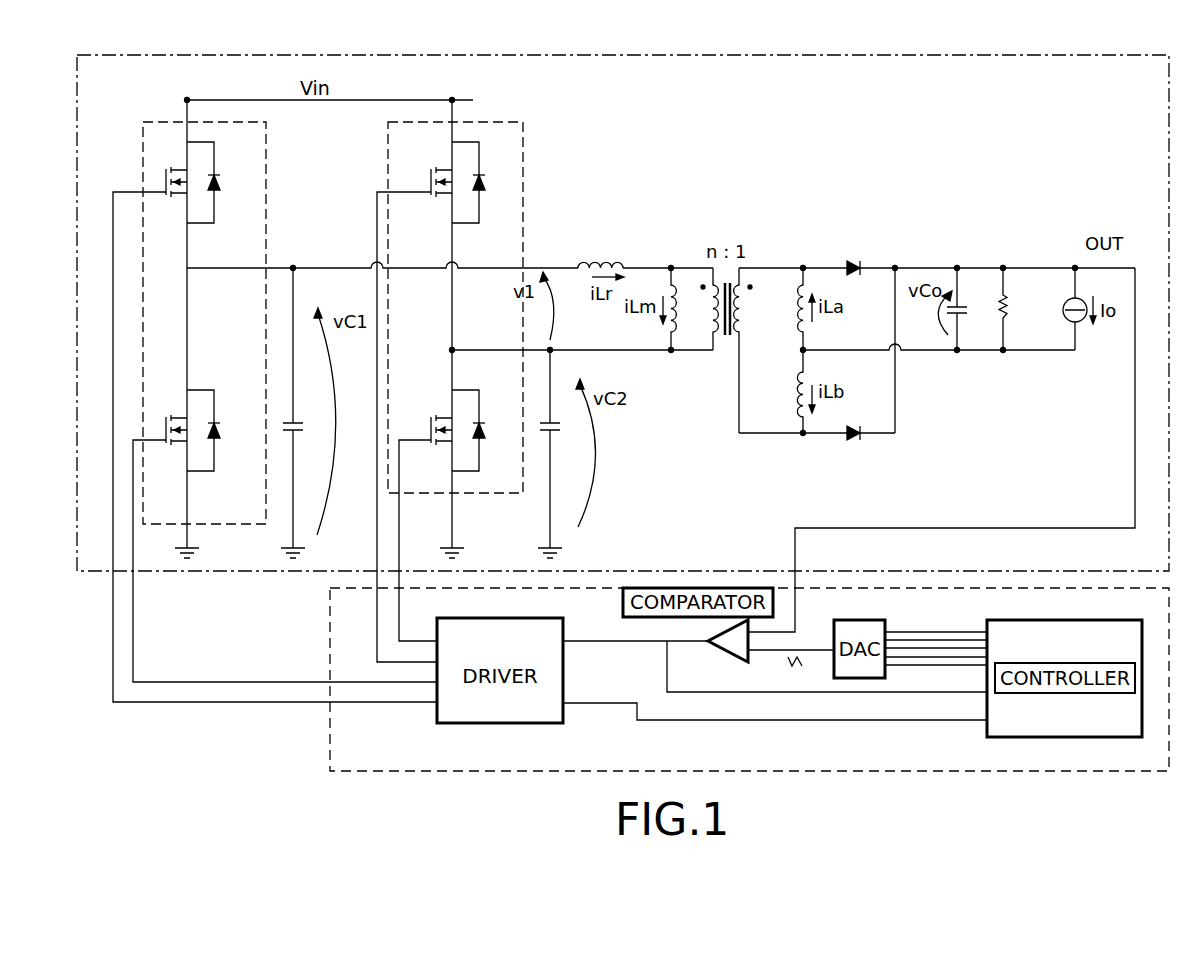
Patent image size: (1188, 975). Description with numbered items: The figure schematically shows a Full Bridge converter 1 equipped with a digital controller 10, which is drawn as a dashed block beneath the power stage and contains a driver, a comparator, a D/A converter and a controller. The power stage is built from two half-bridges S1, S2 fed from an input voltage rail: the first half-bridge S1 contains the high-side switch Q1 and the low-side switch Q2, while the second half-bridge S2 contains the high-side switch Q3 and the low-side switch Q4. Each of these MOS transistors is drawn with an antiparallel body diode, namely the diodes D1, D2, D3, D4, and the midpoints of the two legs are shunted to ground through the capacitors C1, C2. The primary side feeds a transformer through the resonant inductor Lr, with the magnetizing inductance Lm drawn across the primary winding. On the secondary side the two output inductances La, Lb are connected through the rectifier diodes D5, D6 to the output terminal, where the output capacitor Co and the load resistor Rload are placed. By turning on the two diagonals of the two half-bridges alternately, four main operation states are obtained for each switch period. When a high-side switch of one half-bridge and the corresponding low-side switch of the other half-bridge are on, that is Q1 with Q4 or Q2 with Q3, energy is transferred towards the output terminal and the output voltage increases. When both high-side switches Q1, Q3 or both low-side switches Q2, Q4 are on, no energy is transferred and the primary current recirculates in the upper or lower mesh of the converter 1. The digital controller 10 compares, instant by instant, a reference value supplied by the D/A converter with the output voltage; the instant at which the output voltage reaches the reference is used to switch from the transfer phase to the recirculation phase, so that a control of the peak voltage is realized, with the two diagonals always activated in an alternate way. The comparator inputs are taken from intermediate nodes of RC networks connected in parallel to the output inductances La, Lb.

The Full Bridge converter 1 is at (1029, 111).
The digital controller 10 is at (435, 771).
The half-bridge S1 is at (200, 106).
The half-bridge S2 is at (482, 121).
The high-side switch Q1 is at (184, 179).
The low-side switch Q2 is at (184, 427).
The high-side switch Q3 is at (449, 179).
The low-side switch Q4 is at (449, 427).
The body diode D1 is at (226, 183).
The body diode D2 is at (226, 431).
The body diode D3 is at (491, 183).
The body diode D4 is at (491, 431).
The rectifier diode D5 is at (855, 279).
The rectifier diode D6 is at (855, 445).
The capacitor C1 is at (306, 408).
The capacitor C2 is at (563, 449).
The resonant inductor Lr is at (600, 253).
The magnetizing inductance Lm is at (691, 309).
The output inductance La is at (786, 309).
The output inductance Lb is at (786, 391).
The output capacitor Co is at (970, 309).
The load resistor Rload is at (1030, 309).